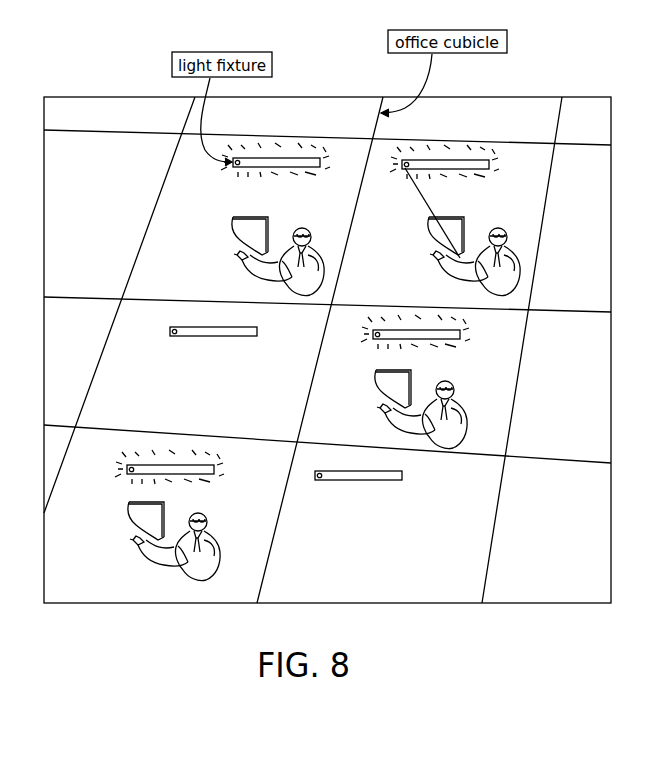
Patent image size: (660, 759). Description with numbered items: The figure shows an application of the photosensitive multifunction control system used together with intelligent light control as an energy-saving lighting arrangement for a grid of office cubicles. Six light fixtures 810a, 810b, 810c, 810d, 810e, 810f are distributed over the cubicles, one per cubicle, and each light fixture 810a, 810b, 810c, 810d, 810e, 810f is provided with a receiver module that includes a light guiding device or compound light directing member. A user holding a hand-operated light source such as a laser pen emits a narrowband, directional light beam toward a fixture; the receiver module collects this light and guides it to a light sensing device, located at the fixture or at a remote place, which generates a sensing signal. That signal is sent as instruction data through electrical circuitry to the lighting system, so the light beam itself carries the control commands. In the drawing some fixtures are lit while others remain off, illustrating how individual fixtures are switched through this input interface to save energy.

The light fixture 810a is at (298, 158).
The light fixture 810b is at (492, 161).
The light fixture 810c is at (240, 337).
The light fixture 810d is at (445, 342).
The light fixture 810e is at (212, 475).
The light fixture 810f is at (380, 481).